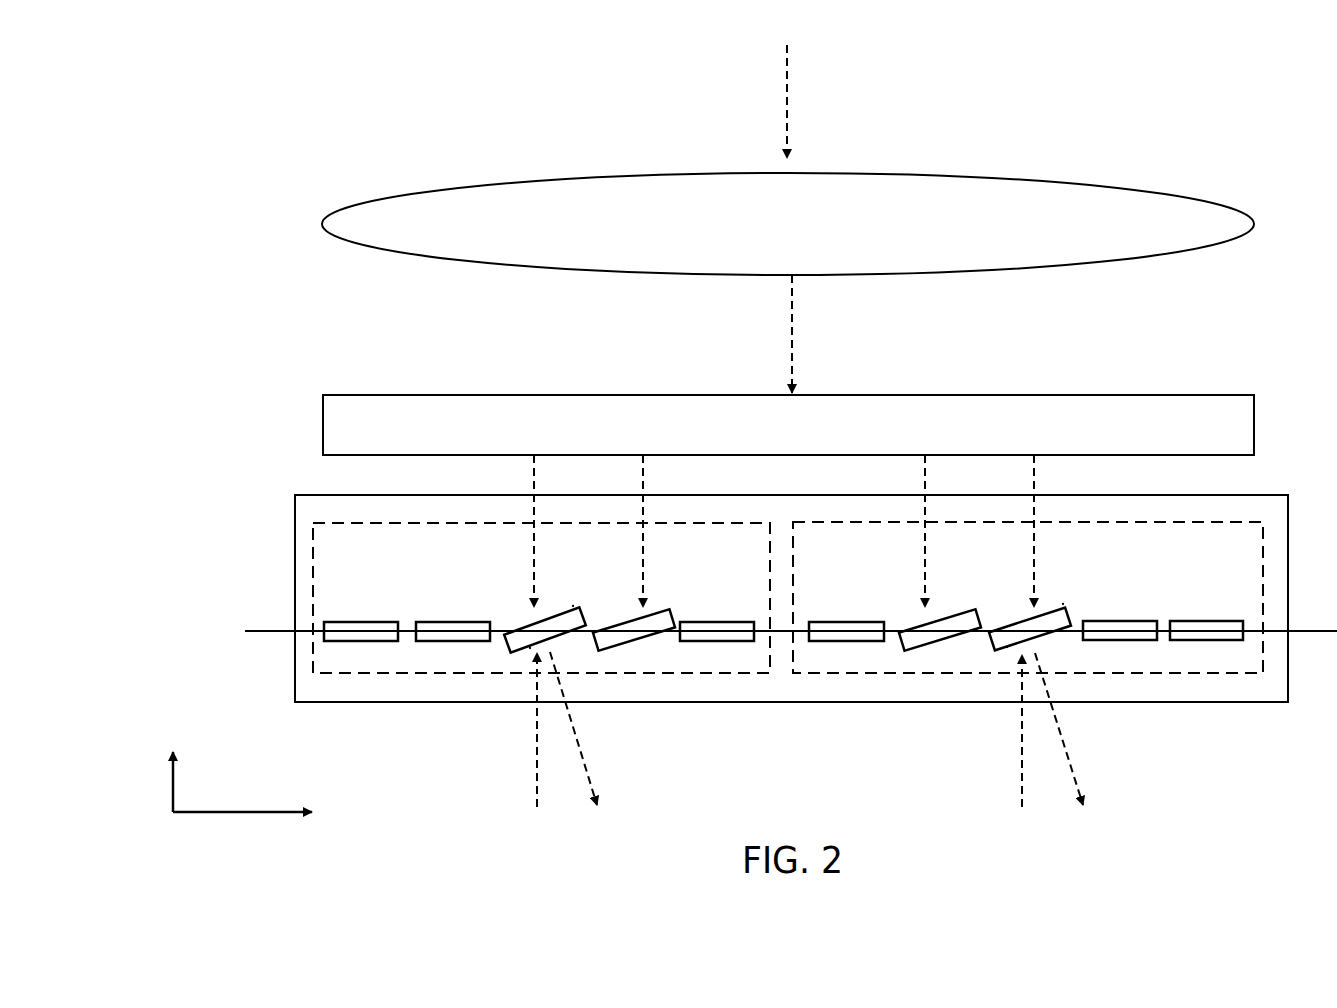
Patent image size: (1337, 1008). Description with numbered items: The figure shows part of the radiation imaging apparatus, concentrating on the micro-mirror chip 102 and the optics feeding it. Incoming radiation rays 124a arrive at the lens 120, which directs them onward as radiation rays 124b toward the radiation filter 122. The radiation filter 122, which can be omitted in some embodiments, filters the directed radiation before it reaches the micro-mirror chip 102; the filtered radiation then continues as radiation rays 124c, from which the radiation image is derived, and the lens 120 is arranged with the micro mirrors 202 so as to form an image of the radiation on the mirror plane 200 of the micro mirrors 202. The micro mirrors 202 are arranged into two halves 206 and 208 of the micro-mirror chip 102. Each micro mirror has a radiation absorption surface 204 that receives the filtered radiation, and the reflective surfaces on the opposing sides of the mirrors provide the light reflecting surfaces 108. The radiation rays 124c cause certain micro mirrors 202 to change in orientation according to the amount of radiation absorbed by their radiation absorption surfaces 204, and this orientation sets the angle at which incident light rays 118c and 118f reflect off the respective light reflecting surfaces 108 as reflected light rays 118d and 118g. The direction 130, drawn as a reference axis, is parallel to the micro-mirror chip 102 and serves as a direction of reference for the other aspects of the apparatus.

The micro-mirror chip 102 is at (303, 492).
The light reflecting surfaces 108 is at (530, 648).
The light ray 118c is at (537, 782).
The reflected light ray 118d is at (590, 758).
The light ray 118f is at (1022, 782).
The reflected light ray 118g is at (1074, 741).
The lens 120 is at (797, 235).
The radiation filter 122 is at (802, 440).
The radiation rays 124a is at (787, 92).
The radiation rays 124b is at (791, 333).
The radiation rays 124c is at (534, 523).
The direction 130 is at (215, 812).
The mirror plane 200 is at (290, 631).
The micro mirrors 202 is at (586, 596).
The radiation absorption surfaces 204 is at (523, 617).
The first half of micro-mirror chip 206 is at (370, 554).
The second half of micro-mirror chip 208 is at (854, 555).